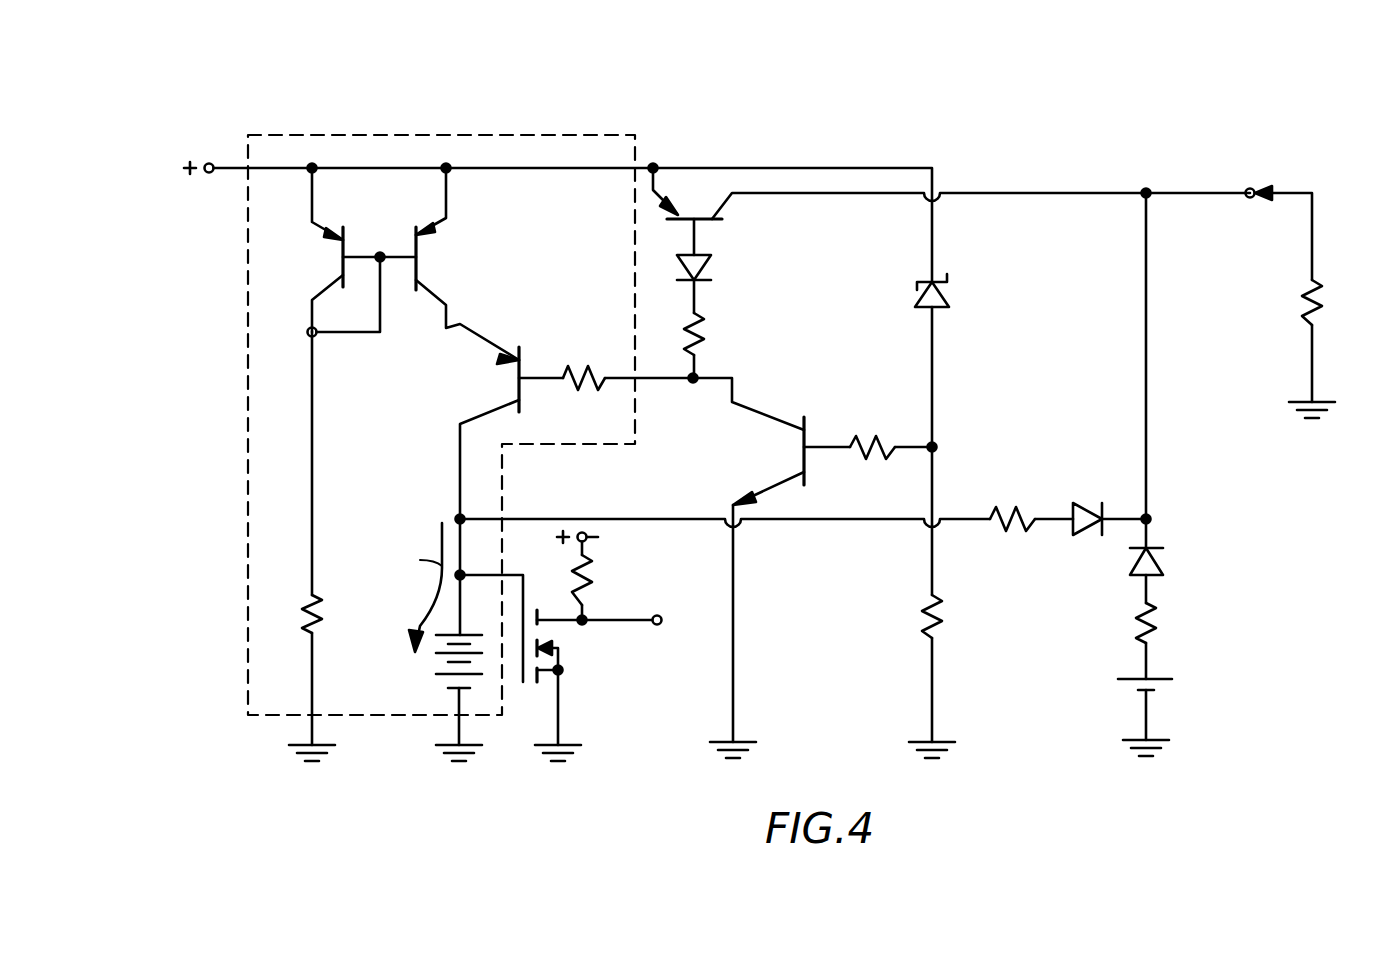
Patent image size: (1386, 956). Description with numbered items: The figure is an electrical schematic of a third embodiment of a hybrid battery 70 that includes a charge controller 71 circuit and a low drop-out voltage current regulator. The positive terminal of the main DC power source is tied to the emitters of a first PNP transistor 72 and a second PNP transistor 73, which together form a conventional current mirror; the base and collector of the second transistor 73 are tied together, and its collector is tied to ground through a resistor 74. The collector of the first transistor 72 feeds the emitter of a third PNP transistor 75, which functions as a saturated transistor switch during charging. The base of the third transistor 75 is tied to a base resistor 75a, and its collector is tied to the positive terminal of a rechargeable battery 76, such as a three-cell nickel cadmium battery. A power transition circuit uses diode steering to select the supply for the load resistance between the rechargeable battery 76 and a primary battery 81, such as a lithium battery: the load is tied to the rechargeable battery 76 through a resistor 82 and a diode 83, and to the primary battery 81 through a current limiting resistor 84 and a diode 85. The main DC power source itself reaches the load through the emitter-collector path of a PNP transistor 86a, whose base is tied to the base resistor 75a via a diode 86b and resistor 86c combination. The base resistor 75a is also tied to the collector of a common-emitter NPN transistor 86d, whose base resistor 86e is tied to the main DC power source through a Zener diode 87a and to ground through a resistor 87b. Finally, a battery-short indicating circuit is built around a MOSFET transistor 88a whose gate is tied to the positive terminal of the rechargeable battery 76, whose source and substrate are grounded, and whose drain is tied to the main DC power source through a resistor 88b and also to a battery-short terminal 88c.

The hybrid battery 70 is at (1125, 97).
The charge controller 71 is at (556, 135).
The first PNP transistor 72 is at (432, 230).
The second PNP transistor 73 is at (326, 292).
The resistor 74 is at (306, 596).
The third PNP transistor 75 is at (482, 410).
The base resistor 75a is at (582, 366).
The rechargeable battery 76 is at (432, 676).
The primary battery 81 is at (1170, 680).
The resistor 82 is at (1014, 506).
The diode 83 is at (1097, 488).
The current limiting resistor 84 is at (1160, 620).
The diode 85 is at (1164, 557).
The PNP transistor 86a is at (722, 226).
The diode 86b is at (712, 275).
The resistor 86c is at (710, 331).
The common-emitter NPN transistor 86d is at (763, 413).
The base resistor 86e is at (866, 440).
The Zener diode 87a is at (945, 290).
The resistor 87b is at (920, 632).
The MOSFET transistor 88a is at (562, 672).
The resistor 88b is at (593, 597).
The battery-short terminal 88c is at (659, 626).